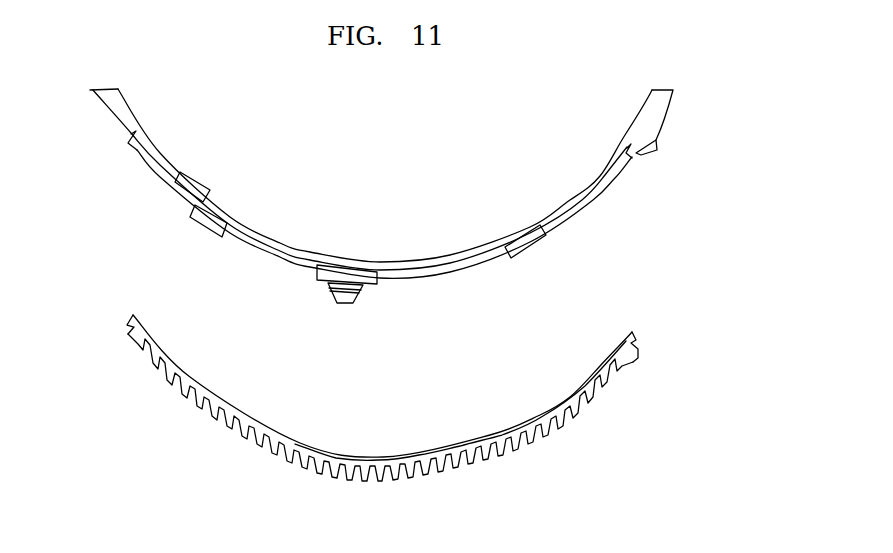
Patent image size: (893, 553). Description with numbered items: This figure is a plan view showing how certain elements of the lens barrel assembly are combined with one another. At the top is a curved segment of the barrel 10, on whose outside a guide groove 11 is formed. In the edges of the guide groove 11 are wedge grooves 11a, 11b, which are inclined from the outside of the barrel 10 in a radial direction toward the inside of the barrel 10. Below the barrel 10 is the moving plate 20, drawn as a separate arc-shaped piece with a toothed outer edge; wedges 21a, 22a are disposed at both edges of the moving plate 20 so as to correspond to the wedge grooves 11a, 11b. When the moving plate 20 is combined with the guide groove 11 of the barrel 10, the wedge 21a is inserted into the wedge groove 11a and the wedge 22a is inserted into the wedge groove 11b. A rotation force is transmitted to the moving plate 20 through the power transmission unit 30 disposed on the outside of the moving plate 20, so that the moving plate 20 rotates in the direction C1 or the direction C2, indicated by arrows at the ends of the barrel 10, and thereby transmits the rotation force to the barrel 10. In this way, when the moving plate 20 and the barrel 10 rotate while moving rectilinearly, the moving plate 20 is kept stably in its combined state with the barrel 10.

The barrel 10 is at (176, 155).
The guide groove 11 is at (183, 190).
The wedge groove 11a is at (130, 150).
The wedge groove 11b is at (628, 162).
The moving plate 20 is at (616, 418).
The wedge 21a is at (133, 315).
The wedge 22a is at (632, 332).
The power transmission unit 30 is at (543, 437).
The rotation direction C1 is at (90, 171).
The rotation direction C2 is at (676, 180).